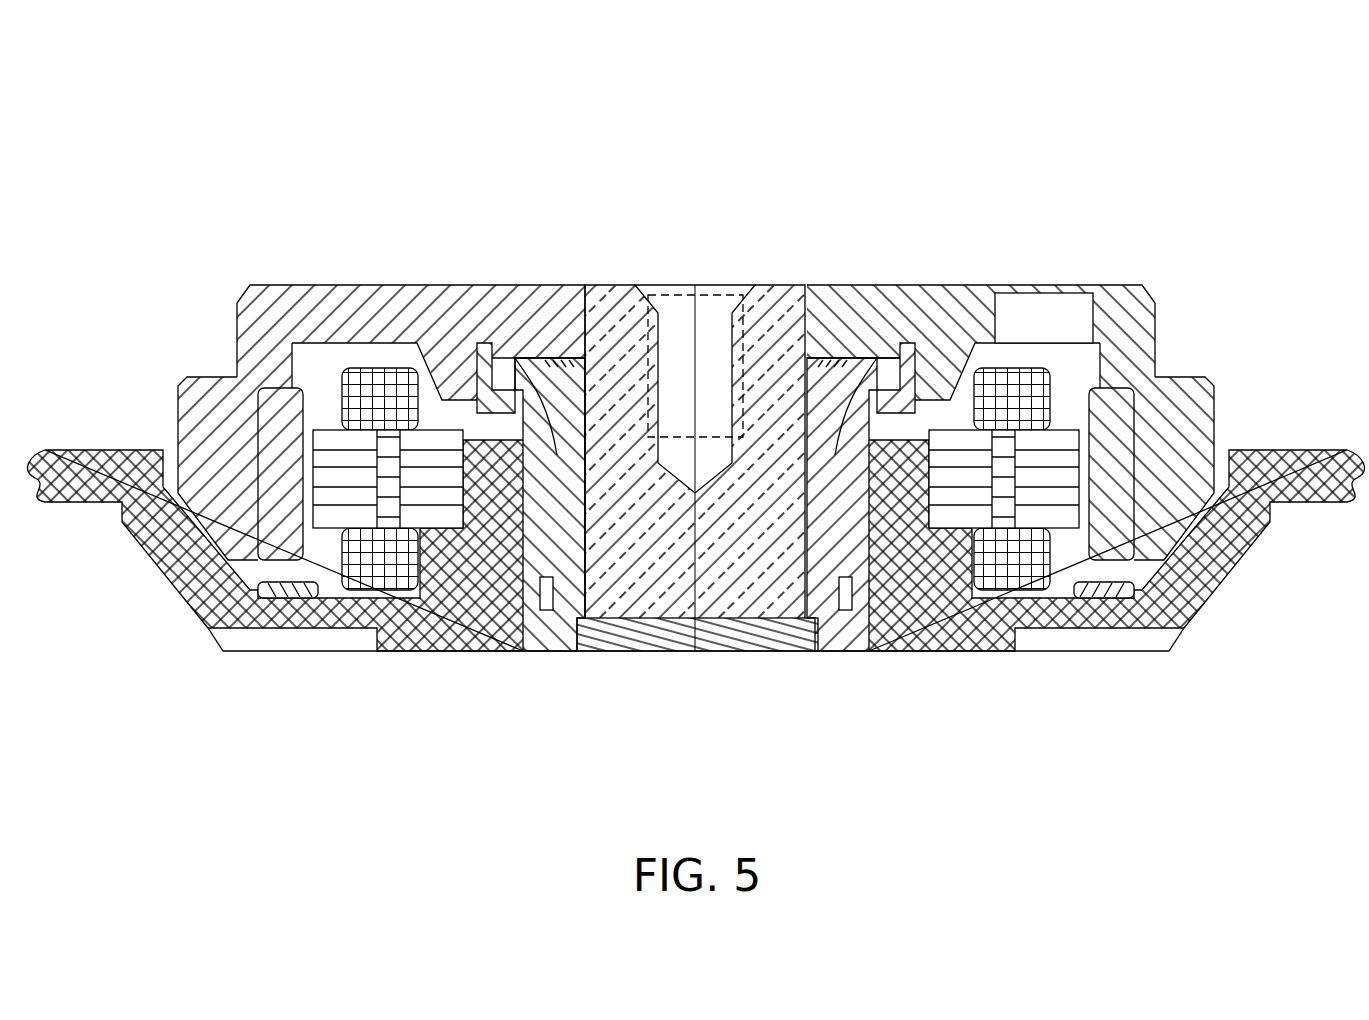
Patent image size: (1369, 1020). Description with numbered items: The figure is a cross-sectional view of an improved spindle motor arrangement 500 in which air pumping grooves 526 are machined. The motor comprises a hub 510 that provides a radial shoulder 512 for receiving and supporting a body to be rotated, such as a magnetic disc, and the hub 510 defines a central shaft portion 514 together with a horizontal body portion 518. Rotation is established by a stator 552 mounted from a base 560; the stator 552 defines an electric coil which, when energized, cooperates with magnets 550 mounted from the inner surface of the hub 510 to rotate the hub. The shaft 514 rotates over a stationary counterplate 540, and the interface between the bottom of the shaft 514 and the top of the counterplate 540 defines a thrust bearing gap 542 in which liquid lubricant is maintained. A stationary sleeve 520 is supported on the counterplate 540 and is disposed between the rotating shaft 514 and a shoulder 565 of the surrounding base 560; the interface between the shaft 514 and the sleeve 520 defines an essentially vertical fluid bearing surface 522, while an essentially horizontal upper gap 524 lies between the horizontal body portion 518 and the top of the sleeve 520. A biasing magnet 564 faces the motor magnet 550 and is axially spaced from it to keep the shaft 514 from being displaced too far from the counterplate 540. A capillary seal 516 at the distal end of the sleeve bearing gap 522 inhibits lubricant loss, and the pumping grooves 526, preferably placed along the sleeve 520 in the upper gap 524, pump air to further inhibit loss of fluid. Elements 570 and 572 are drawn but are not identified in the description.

The spindle motor arrangement 500 is at (1140, 112).
The hub 510 is at (266, 318).
The radial shoulder 512 is at (213, 375).
The central shaft portion 514 is at (768, 428).
The capillary seal 516 is at (586, 340).
The horizontal body portion 518 is at (872, 312).
The sleeve 520 is at (547, 540).
The fluid bearing surface 522 is at (548, 440).
The upper gap 524 is at (560, 372).
The pumping grooves 526 is at (556, 362).
The counterplate 540 is at (603, 637).
The thrust bearing gap 542 is at (717, 622).
The magnets 550 is at (250, 547).
The stator 552 is at (1035, 572).
The base 560 is at (423, 623).
The biasing magnet 564 is at (280, 590).
The shoulder 565 is at (857, 585).
The right retainer bar 570 is at (907, 363).
The left retainer bar 572 is at (487, 370).